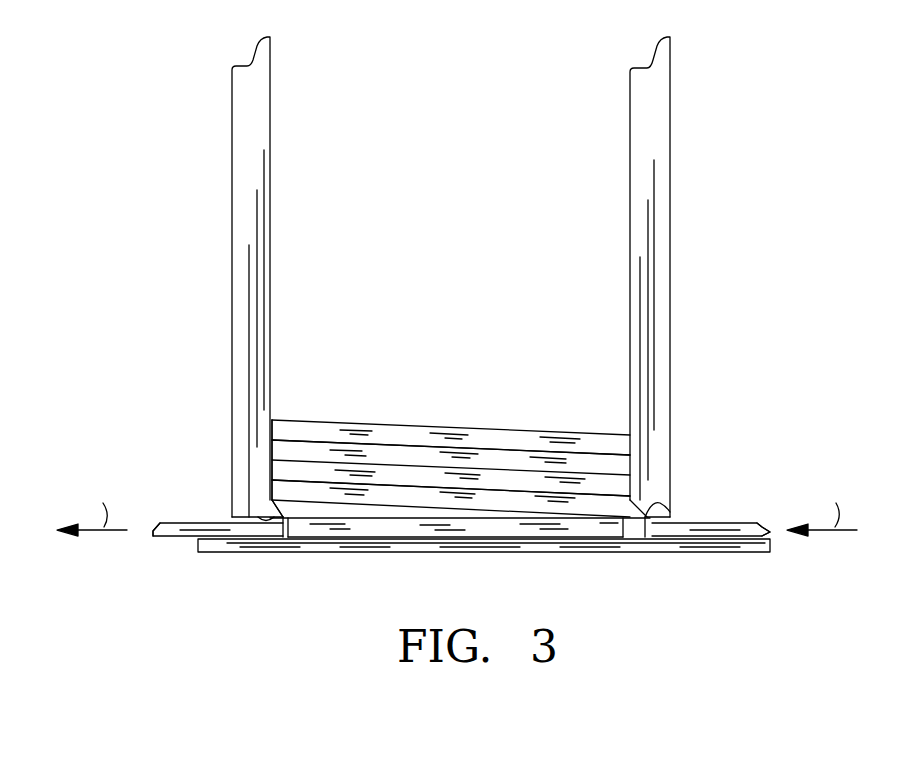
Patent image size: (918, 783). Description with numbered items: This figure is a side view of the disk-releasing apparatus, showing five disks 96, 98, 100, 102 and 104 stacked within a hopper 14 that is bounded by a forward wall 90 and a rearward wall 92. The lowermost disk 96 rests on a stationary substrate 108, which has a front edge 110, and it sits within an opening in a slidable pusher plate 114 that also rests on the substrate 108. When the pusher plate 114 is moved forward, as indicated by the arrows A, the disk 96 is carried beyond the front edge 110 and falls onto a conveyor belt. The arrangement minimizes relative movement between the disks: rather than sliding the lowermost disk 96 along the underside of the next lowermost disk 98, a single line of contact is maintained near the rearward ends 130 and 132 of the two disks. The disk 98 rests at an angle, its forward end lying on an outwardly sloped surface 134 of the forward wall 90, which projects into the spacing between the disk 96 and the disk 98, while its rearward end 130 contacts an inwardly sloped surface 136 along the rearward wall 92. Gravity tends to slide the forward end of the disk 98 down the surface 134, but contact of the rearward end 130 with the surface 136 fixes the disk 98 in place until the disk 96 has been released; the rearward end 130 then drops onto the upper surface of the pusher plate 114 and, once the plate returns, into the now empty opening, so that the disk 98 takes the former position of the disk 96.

The hopper 14 is at (160, 192).
The forward wall 90 is at (258, 134).
The rearward wall 92 is at (658, 125).
The lowermost disk 96 is at (387, 527).
The next lowermost disk 98 is at (297, 491).
The disk 100 is at (622, 487).
The disk 102 is at (623, 462).
The disk 104 is at (600, 440).
The stationary substrate 108 is at (285, 547).
The front edge 110 is at (198, 541).
The slidable pusher plate 114 is at (158, 532).
The rearward end 130 is at (632, 537).
The rearward end 132 is at (655, 540).
The outwardly sloped surface 134 is at (262, 515).
The inwardly sloped surface 136 is at (672, 508).